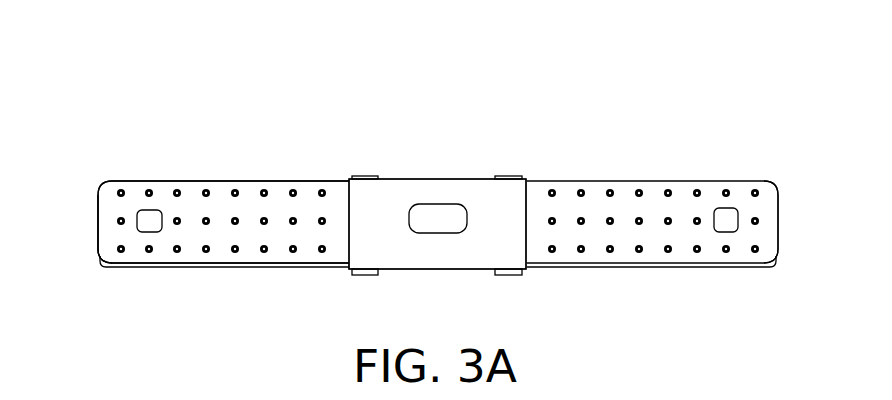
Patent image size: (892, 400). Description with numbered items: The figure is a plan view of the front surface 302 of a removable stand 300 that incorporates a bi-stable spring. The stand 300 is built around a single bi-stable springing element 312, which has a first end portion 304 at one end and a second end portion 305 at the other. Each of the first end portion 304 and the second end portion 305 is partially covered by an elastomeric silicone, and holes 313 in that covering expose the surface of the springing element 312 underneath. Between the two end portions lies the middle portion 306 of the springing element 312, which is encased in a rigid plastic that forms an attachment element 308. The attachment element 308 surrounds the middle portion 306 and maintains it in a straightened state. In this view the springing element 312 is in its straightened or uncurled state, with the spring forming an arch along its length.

The removable stand 300 is at (611, 86).
The front surface 302 is at (204, 207).
The first end portion 304 is at (110, 230).
The second end portion 305 is at (760, 226).
The middle portion 306 is at (520, 125).
The attachment element 308 is at (383, 197).
The bi-stable springing element 312 is at (280, 266).
The holes 313 is at (265, 193).